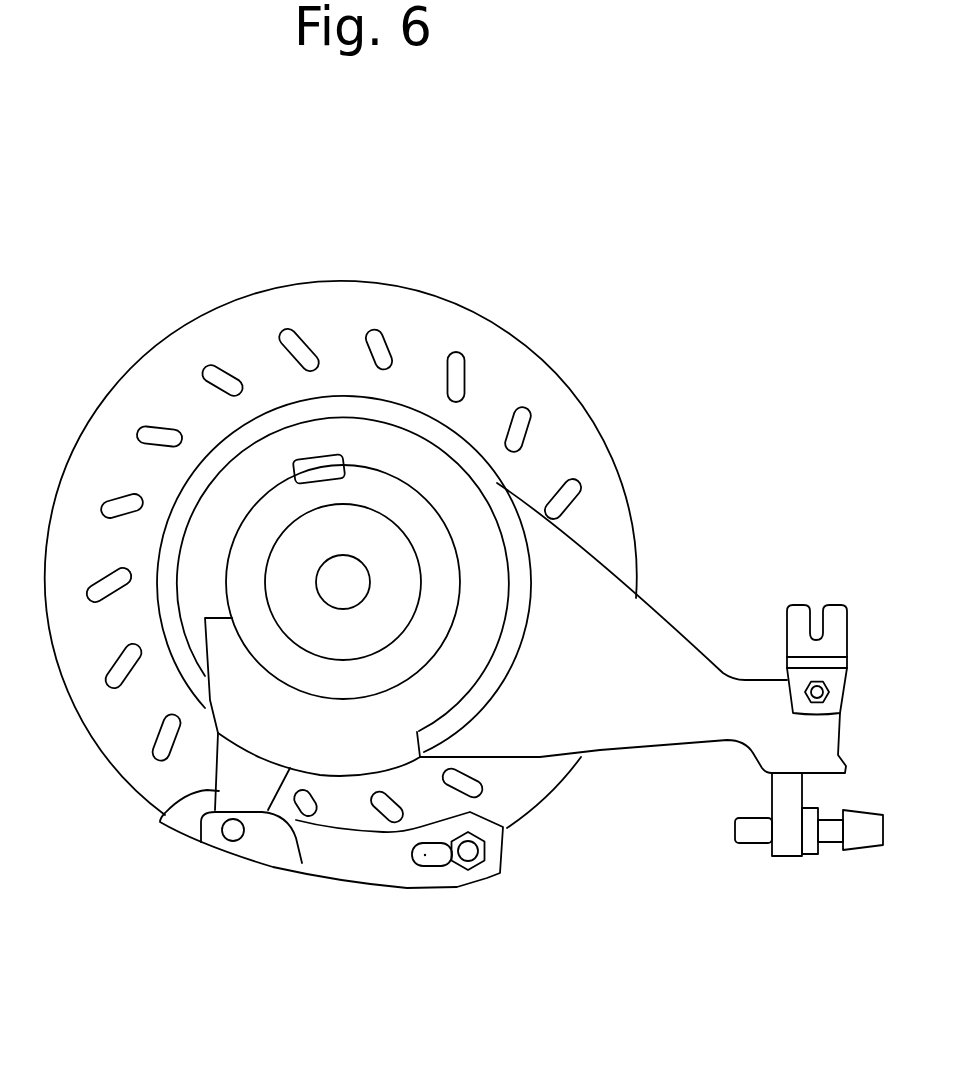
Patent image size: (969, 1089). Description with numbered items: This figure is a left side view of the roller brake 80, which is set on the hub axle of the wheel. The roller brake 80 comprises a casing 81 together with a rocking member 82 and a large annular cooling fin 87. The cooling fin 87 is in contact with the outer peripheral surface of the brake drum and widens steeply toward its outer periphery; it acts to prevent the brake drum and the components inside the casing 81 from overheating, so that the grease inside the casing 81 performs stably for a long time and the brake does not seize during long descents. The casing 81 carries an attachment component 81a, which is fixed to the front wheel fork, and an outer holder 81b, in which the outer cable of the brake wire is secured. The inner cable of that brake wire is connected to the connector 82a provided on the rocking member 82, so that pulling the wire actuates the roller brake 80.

The roller brake 80 is at (275, 262).
The casing 81 is at (230, 436).
The attachment component 81a is at (798, 620).
The outer holder 81b is at (788, 832).
The rocking member 82 is at (207, 790).
The connector 82a is at (468, 857).
The cooling fin 87 is at (517, 373).